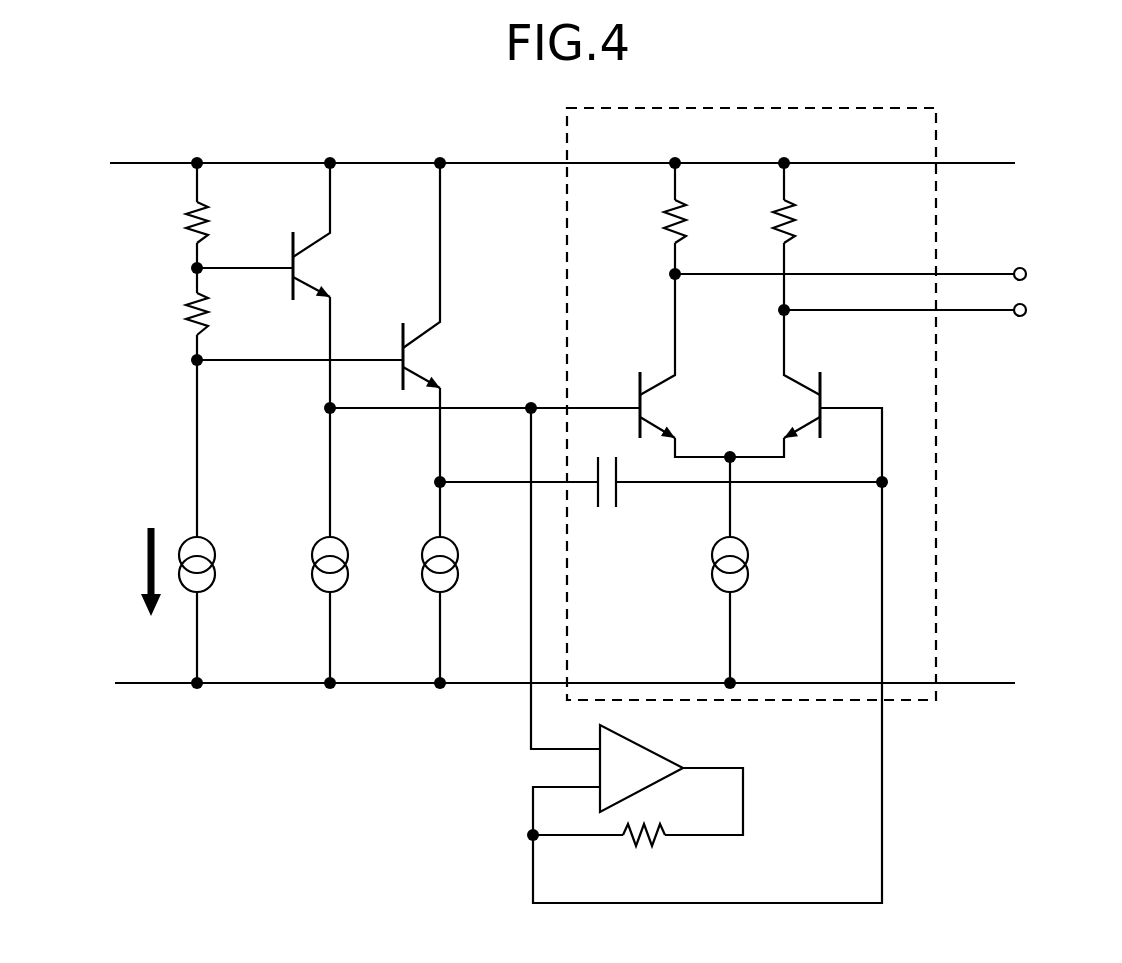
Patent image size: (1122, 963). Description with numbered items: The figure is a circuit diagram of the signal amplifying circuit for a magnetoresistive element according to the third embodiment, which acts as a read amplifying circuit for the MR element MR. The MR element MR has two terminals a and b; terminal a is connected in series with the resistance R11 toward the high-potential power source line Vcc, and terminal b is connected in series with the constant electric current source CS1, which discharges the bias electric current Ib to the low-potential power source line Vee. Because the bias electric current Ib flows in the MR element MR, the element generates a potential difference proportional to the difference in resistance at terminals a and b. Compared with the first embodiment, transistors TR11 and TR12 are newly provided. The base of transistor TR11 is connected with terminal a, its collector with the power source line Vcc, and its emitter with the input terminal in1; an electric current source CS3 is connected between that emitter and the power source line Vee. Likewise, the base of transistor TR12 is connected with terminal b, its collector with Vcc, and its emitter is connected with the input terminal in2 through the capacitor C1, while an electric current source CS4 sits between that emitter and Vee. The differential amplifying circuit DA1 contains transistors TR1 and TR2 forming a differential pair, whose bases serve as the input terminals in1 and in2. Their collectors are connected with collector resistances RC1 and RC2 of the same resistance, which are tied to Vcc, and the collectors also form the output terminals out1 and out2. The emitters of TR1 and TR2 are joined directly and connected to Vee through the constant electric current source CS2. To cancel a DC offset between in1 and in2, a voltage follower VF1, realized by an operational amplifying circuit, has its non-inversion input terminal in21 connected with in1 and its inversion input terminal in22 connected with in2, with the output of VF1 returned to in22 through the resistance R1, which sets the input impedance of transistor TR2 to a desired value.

The power source line Vcc is at (532, 164).
The power source line Vee is at (532, 684).
The resistance R11 is at (170, 203).
The magnetoresistive element MR is at (174, 314).
The terminal a is at (229, 268).
The terminal b is at (284, 436).
The constant electric current source CS1 is at (220, 610).
The bias electric current Ib is at (138, 572).
The transistor TR11 is at (338, 231).
The transistor TR12 is at (447, 276).
The electric current source CS3 is at (354, 490).
The electric current source CS4 is at (463, 535).
The input terminal in1 is at (485, 397).
The input terminal in2 is at (707, 642).
The non-inversion input terminal in21 is at (539, 584).
The inversion input terminal in22 is at (508, 808).
The capacitor C1 is at (664, 502).
The differential amplifying circuit DA1 is at (751, 388).
The collector resistance RC1 is at (644, 218).
The collector resistance RC2 is at (806, 236).
The output terminal out1 is at (877, 275).
The output terminal out2 is at (931, 311).
The transistor TR1 is at (685, 365).
The transistor TR2 is at (775, 383).
The constant electric current source CS2 is at (756, 567).
The voltage follower VF1 is at (671, 779).
The resistance R1 is at (599, 854).